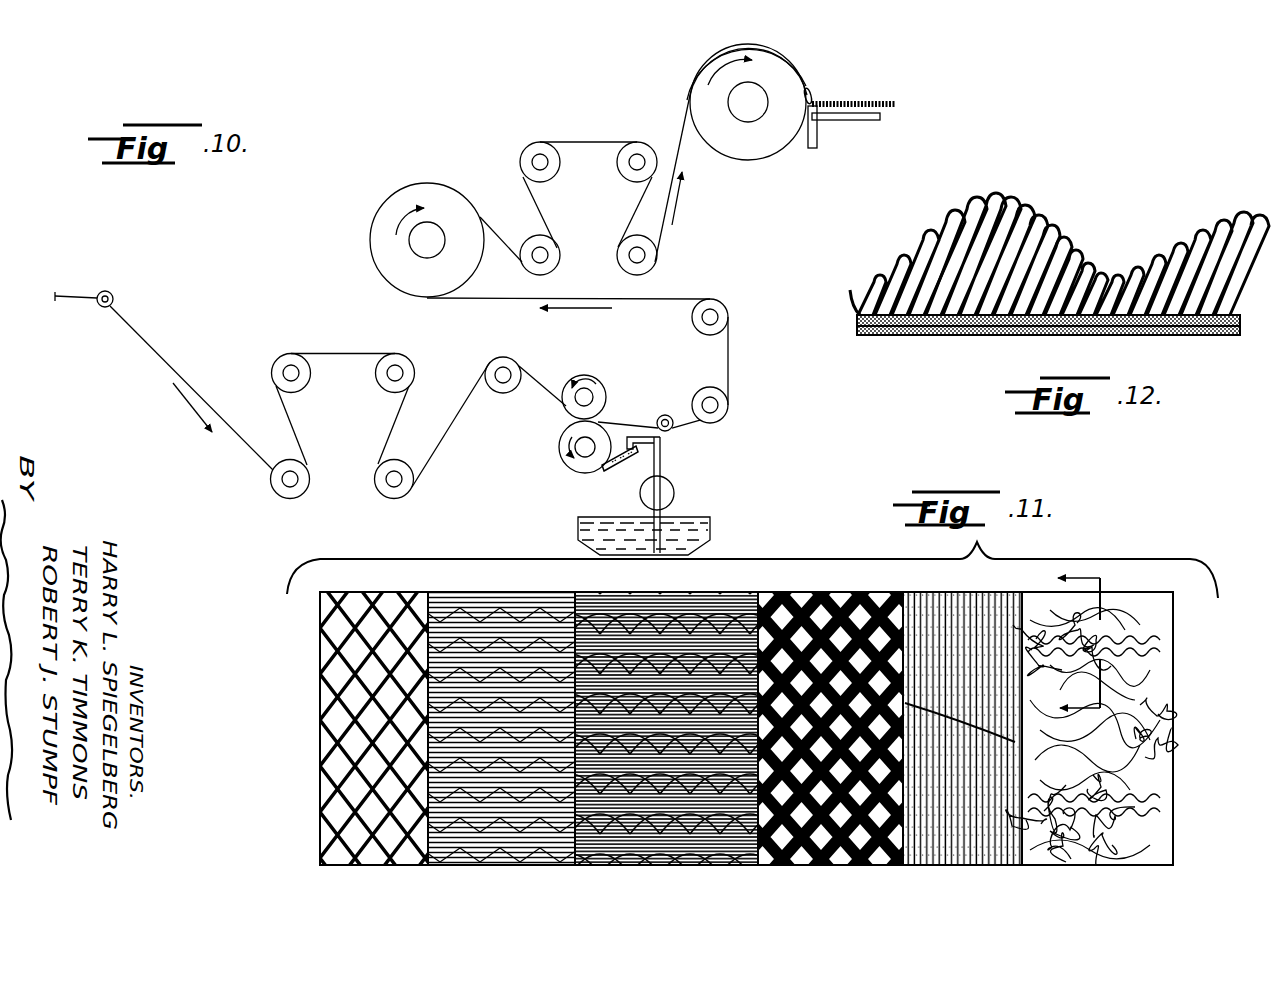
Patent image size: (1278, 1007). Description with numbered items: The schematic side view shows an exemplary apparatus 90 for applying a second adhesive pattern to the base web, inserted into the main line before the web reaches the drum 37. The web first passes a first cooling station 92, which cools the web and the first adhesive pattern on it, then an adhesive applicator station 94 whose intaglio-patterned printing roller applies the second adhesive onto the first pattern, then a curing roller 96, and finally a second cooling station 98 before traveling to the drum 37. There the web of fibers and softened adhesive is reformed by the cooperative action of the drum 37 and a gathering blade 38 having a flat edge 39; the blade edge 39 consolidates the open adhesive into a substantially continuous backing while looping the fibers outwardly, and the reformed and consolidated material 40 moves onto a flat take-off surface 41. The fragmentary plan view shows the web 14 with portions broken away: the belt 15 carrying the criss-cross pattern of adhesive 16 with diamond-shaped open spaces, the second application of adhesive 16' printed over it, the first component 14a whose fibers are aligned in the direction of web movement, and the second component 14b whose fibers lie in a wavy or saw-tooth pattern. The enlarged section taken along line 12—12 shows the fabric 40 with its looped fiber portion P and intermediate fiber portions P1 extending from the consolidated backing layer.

In FIG. 10, the exemplary apparatus 90 is at (437, 180).
In FIG. 10, the curing roller 96 is at (385, 240).
In FIG. 10, the second cooling station 98 is at (594, 172).
In FIG. 10, the first cooling station 92 is at (348, 400).
In FIG. 10, the adhesive applicator station 94 is at (712, 448).
In FIG. 10, the drum 37 is at (780, 62).
In FIG. 10, the flat edge 39 is at (814, 92).
In FIG. 10, the reformed and consolidated material 40 is at (862, 102).
In FIG. 12, the reformed and consolidated material 40 is at (1150, 240).
In FIG. 11, the reformed and consolidated material 40 is at (1150, 690).
In FIG. 10, the gathering blade 38 is at (812, 150).
In FIG. 10, the flat take-off surface 41 is at (873, 124).
In FIG. 12, the fiber portion P is at (1005, 200).
In FIG. 12, the intermediate fiber portions P1 is at (1080, 252).
In FIG. 12, the pattern of adhesive 16 is at (1022, 330).
In FIG. 11, the pattern of adhesive 16 is at (622, 716).
In FIG. 12, the adhesive layer 16' is at (1048, 351).
In FIG. 11, the adhesive layer 16' is at (890, 731).
In FIG. 11, the belt 15 is at (345, 725).
In FIG. 11, the first component 14a is at (452, 616).
In FIG. 11, the second component 14b is at (632, 630).
In FIG. 11, the web 14 is at (592, 872).
In FIG. 11, the section line 12 is at (1102, 647).